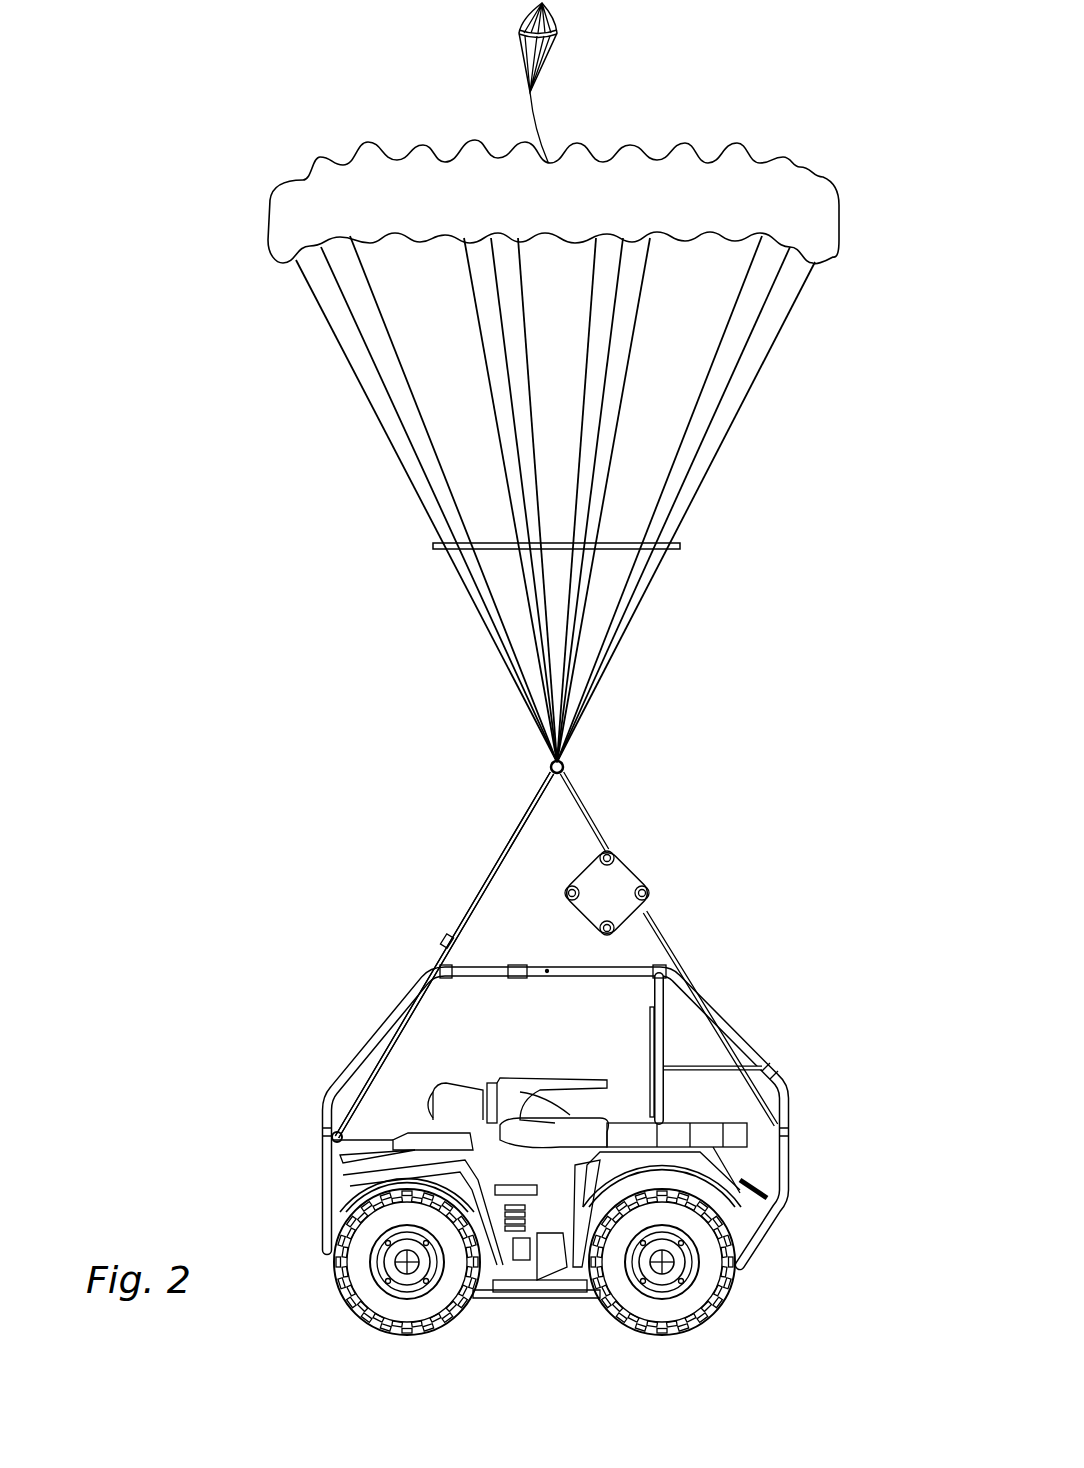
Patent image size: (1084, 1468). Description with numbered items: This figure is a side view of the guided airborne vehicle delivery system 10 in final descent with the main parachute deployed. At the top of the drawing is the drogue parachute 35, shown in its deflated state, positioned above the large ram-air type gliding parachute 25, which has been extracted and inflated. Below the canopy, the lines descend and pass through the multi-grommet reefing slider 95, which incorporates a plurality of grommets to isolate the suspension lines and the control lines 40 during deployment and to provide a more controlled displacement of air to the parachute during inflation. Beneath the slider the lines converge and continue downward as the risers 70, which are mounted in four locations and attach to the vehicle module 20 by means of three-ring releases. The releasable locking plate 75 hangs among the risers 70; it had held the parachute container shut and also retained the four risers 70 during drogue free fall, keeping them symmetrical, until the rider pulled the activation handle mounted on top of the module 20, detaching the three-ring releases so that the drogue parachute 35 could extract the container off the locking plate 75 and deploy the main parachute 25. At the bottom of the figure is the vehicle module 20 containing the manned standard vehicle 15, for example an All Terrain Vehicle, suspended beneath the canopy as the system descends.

The guided airborne vehicle delivery system 10 is at (853, 435).
The manned standard vehicle 15 is at (448, 1088).
The vehicle module 20 is at (773, 1052).
The ram-air type gliding parachute 25 is at (272, 232).
The drogue parachute 35 is at (552, 10).
The control lines 40 is at (448, 943).
The risers 70 is at (502, 847).
The releasable locking plate 75 is at (650, 875).
The multi-grommet reefing slider 95 is at (433, 545).